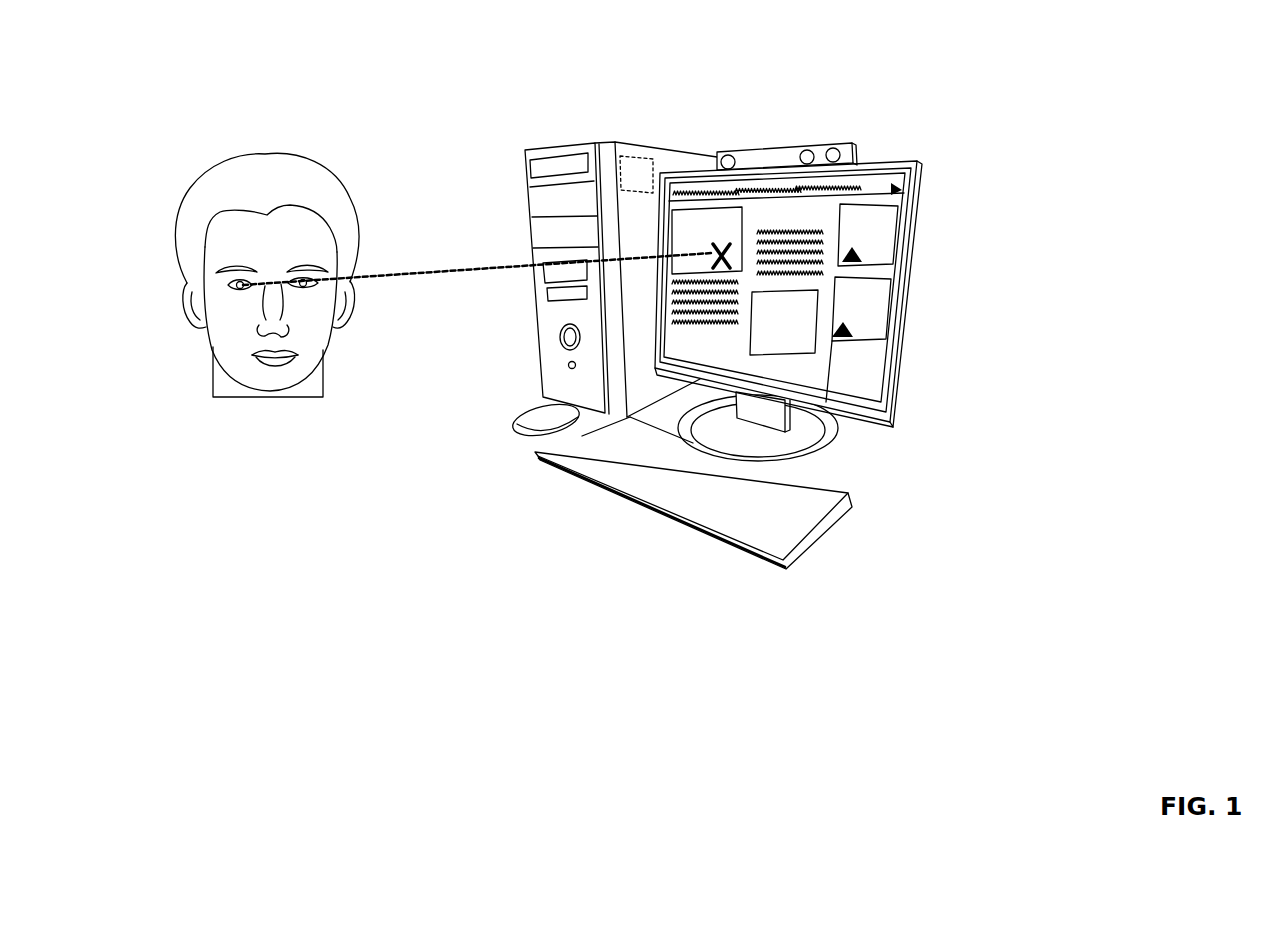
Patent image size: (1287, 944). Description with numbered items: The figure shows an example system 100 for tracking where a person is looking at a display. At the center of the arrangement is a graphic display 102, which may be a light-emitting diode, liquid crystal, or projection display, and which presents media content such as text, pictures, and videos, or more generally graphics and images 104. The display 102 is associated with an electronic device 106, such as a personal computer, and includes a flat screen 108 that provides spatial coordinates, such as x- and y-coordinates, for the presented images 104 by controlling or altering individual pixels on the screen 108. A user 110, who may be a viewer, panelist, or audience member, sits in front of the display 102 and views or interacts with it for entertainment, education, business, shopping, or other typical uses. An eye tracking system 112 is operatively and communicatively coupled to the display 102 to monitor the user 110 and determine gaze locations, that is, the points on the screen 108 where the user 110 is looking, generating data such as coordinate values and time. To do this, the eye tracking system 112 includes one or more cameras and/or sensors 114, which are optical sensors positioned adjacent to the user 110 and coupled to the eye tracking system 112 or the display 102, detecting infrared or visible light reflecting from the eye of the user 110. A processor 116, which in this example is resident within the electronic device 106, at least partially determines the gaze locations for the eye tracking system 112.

The system 100 is at (925, 45).
The graphic display 102 is at (923, 161).
The images 104 is at (724, 237).
The electronic device 106 is at (563, 147).
The screen 108 is at (903, 185).
The user 110 is at (334, 196).
The eye tracking system 112 is at (778, 146).
The cameras and/or sensors 114 is at (808, 148).
The processor 116 is at (633, 155).